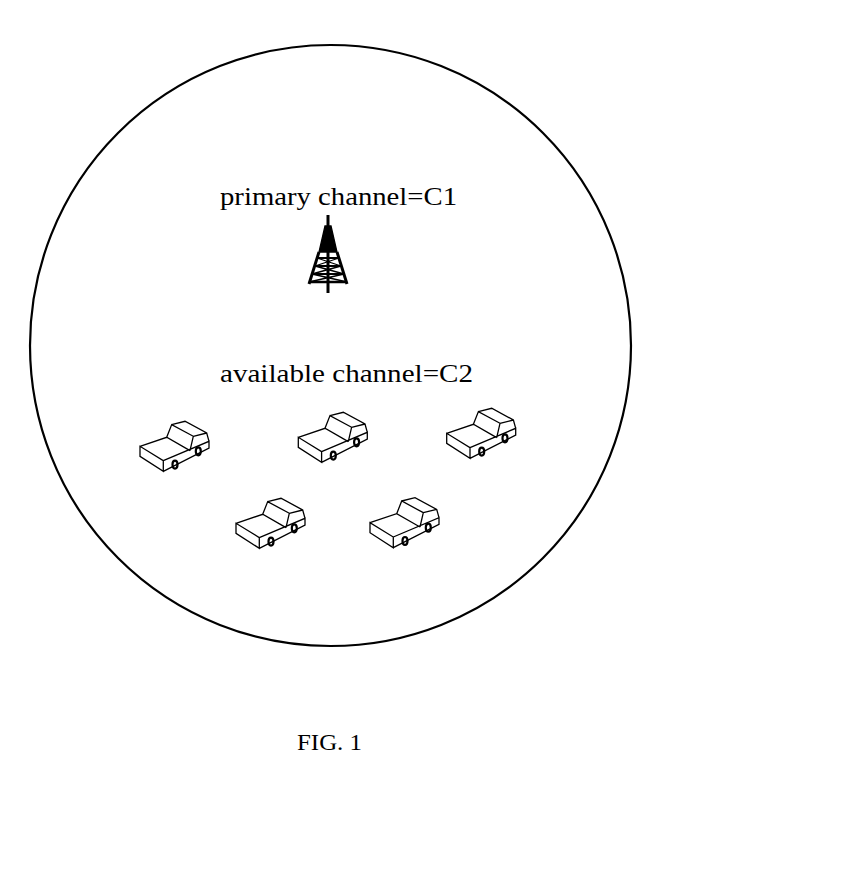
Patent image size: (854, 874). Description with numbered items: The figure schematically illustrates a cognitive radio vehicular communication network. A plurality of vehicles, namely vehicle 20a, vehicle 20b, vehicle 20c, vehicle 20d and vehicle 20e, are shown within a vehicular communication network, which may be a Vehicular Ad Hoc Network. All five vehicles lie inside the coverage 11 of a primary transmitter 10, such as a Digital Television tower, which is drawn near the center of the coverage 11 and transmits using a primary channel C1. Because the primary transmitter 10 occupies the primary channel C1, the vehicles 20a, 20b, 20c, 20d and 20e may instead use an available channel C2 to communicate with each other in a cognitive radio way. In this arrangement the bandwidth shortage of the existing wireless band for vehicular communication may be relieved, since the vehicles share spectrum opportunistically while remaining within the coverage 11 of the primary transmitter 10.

The coverage 11 is at (381, 50).
The primary transmitter 10 is at (350, 254).
The vehicle 20a is at (174, 463).
The vehicle 20b is at (347, 446).
The vehicle 20c is at (487, 453).
The vehicle 20d is at (270, 543).
The vehicle 20e is at (404, 542).